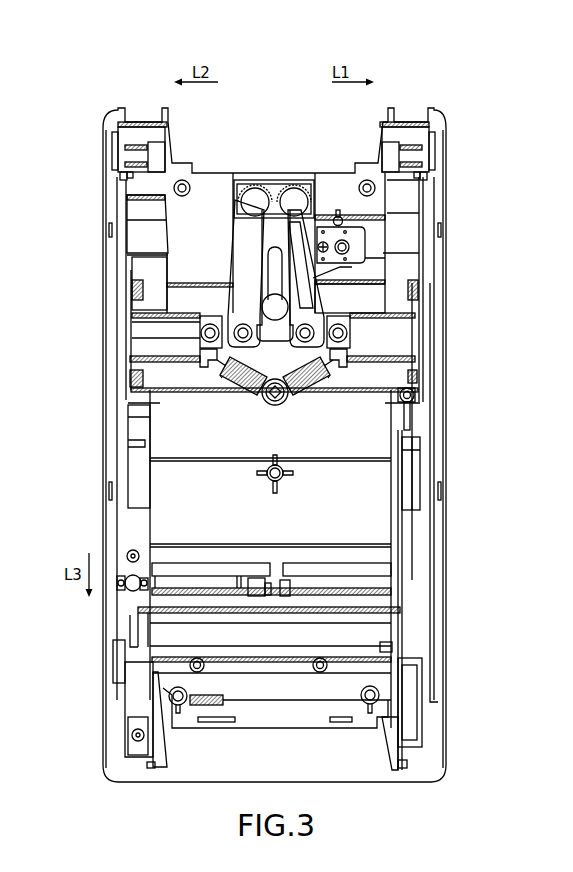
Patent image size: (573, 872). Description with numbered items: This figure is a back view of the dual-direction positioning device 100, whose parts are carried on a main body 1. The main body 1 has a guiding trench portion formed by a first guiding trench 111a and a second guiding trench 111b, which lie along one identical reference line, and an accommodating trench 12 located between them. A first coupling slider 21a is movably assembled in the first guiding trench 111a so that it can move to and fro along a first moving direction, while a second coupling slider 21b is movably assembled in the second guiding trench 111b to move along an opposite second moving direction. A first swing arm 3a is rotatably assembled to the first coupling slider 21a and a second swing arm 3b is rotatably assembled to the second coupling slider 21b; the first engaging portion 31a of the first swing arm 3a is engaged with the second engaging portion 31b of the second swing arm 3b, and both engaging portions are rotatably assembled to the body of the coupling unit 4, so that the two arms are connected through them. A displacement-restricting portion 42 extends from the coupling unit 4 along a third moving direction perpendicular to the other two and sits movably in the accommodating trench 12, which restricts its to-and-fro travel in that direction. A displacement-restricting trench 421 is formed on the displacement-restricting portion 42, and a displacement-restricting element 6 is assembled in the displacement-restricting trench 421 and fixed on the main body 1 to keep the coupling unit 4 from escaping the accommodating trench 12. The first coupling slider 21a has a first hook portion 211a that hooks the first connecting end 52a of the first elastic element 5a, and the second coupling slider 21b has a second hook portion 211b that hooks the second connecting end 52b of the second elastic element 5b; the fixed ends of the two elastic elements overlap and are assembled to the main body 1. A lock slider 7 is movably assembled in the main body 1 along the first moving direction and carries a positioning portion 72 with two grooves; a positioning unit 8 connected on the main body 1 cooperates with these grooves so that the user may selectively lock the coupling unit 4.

The dual-direction positioning device 100 is at (107, 81).
The main body 1 is at (108, 128).
The second engaging portion 31b is at (248, 182).
The first engaging portion 31a is at (292, 186).
The positioning unit 8 is at (332, 240).
The lock slider 7 is at (358, 233).
The positioning portion 72 is at (349, 250).
The displacement-restricting trench 421 is at (272, 265).
The second swing arm 3b is at (245, 270).
The first swing arm 3a is at (316, 278).
The displacement-restricting element 6 is at (268, 303).
The second coupling slider 21b is at (212, 325).
The first coupling slider 21a is at (336, 324).
The displacement-restricting portion 42 is at (158, 337).
The second guiding trench 111b is at (203, 345).
The first guiding trench 111a is at (392, 336).
The second hook portion 211b is at (217, 366).
The first hook portion 211a is at (333, 366).
The second connecting end 52b is at (224, 364).
The first connecting end 52a is at (326, 364).
The second elastic element 5b is at (238, 386).
The first elastic element 5a is at (312, 386).
The coupling unit 4 is at (284, 343).
The accommodating trench 12 is at (265, 358).